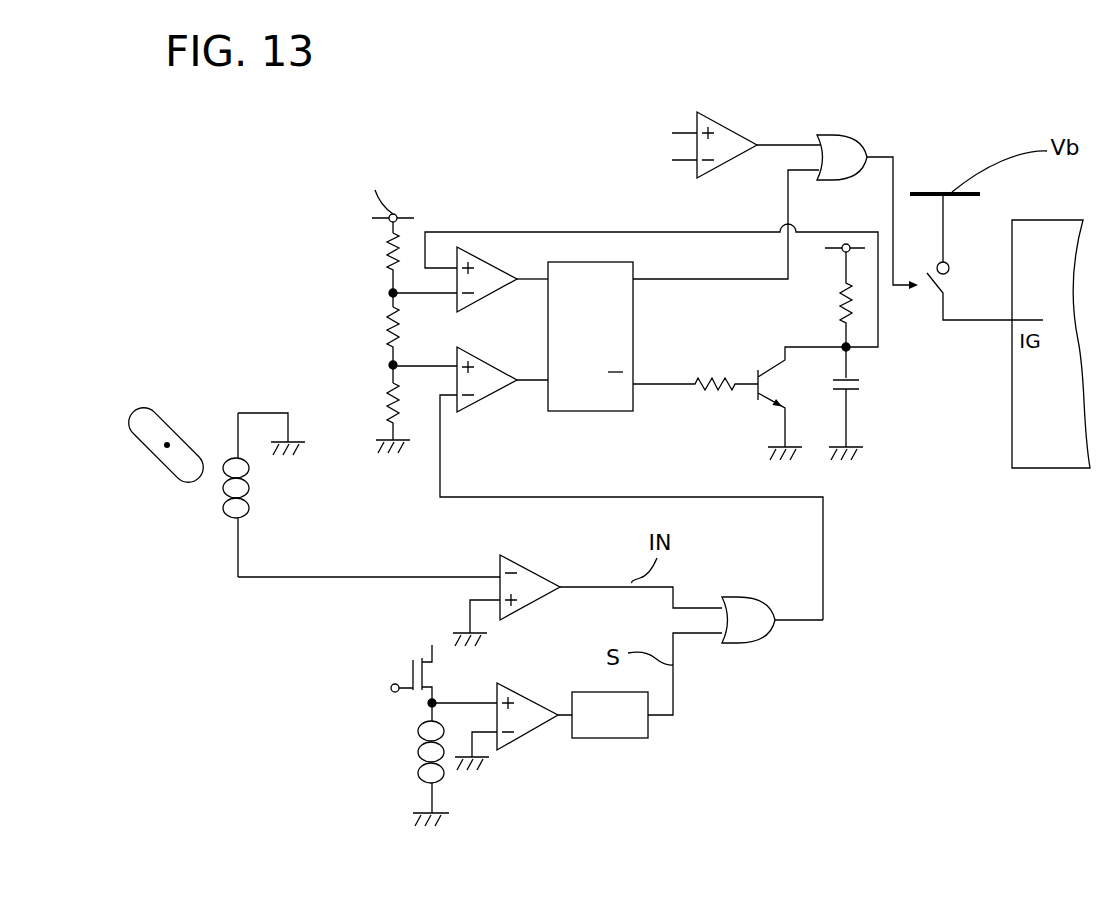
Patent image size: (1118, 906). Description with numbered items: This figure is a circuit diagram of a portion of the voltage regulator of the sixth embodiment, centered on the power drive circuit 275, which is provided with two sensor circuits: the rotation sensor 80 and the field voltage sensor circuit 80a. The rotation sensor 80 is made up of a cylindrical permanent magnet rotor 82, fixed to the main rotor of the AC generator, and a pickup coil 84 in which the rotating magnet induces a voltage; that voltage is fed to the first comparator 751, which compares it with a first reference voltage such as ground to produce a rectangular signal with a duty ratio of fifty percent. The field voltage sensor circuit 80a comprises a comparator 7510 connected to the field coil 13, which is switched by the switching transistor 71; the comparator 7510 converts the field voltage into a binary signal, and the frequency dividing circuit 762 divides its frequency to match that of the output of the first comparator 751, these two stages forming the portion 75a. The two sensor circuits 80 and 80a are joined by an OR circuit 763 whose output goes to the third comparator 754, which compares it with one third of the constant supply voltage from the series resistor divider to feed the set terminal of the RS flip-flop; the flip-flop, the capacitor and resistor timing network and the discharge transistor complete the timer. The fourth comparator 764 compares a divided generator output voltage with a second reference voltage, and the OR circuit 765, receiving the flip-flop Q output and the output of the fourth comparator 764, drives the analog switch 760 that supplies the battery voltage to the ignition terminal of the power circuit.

The field coil 13 is at (417, 760).
The switching transistor 71 is at (430, 675).
The power drive circuit portion 75a is at (695, 713).
The rotation sensor 80 is at (222, 412).
The field voltage sensor circuit 80a is at (598, 810).
The permanent magnet rotor 82 is at (173, 487).
The pickup coil 84 is at (257, 525).
The power drive circuit 275 is at (867, 475).
The first comparator 751 is at (523, 567).
The third comparator 754 is at (497, 390).
The analog switch 760 is at (955, 267).
The frequency dividing circuit 762 is at (625, 738).
The OR circuit 763 is at (745, 642).
The fourth comparator 764 is at (723, 123).
The OR circuit 765 is at (827, 133).
The comparator 7510 is at (527, 730).